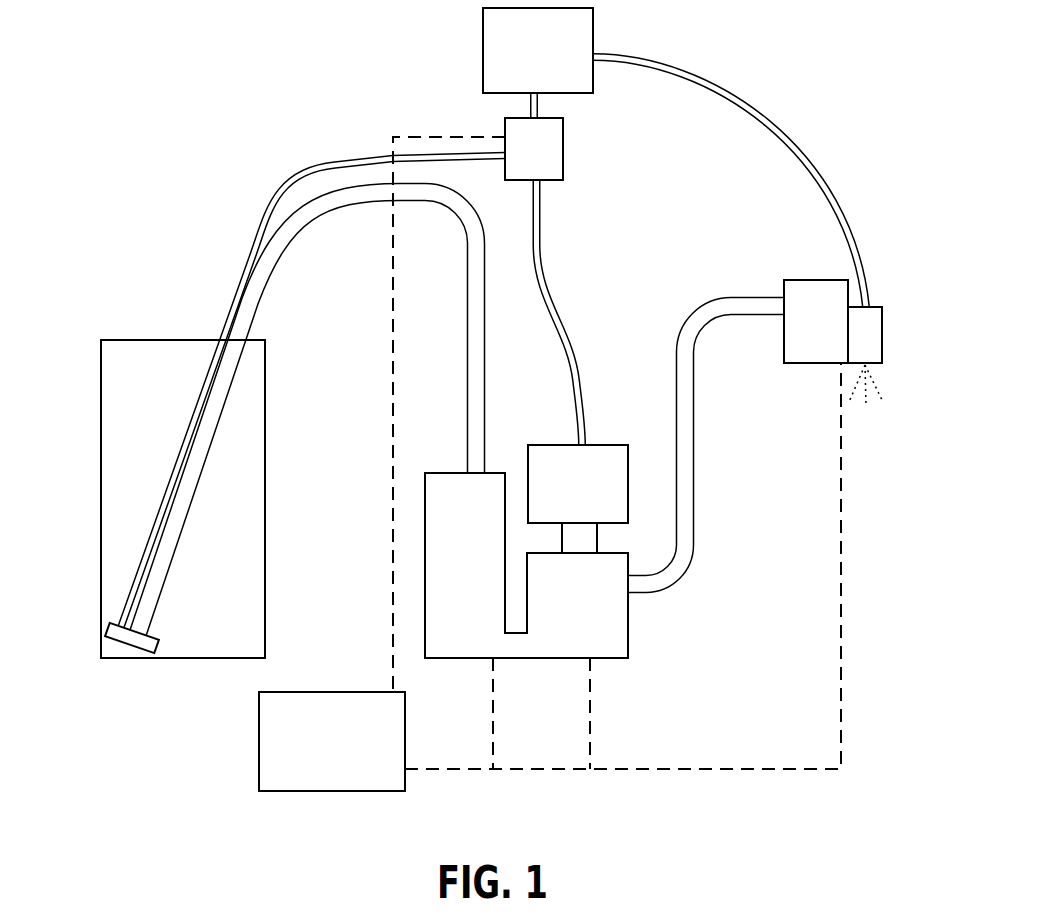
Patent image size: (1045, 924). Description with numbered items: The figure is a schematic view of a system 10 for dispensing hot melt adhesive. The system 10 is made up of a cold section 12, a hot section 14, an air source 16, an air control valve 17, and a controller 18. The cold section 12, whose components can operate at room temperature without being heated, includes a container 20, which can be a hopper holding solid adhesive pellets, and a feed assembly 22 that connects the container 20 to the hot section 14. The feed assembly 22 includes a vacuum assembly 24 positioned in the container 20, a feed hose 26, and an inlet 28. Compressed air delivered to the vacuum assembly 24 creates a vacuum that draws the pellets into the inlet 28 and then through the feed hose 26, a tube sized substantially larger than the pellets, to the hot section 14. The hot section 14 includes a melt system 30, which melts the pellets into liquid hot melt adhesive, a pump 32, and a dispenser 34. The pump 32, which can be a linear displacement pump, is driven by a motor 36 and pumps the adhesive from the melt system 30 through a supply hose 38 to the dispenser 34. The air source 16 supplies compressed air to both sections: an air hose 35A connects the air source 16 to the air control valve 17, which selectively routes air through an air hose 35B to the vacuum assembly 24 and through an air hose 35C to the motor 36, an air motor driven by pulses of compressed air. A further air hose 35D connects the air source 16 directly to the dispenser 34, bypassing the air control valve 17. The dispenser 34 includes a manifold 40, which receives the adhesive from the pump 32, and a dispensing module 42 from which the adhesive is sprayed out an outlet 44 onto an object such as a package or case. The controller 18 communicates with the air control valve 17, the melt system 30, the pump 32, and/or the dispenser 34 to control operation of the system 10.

The system 10 is at (132, 113).
The cold section 12 is at (152, 278).
The hot section 14 is at (612, 310).
The air source 16 is at (483, 55).
The air control valve 17 is at (505, 128).
The controller 18 is at (358, 692).
The container 20 is at (107, 340).
The feed assembly 22 is at (280, 238).
The vacuum assembly 24 is at (168, 653).
The feed hose 26 is at (360, 213).
The inlet 28 is at (120, 648).
The melt system 30 is at (453, 658).
The pump 32 is at (610, 672).
The dispenser 34 is at (816, 268).
The air hose 35A is at (540, 100).
The air hose 35B is at (362, 155).
The air hose 35C is at (540, 258).
The air hose 35D is at (695, 68).
The motor 36 is at (563, 445).
The supply hose 38 is at (697, 455).
The manifold 40 is at (800, 363).
The dispensing module 42 is at (892, 326).
The outlet 44 is at (878, 364).